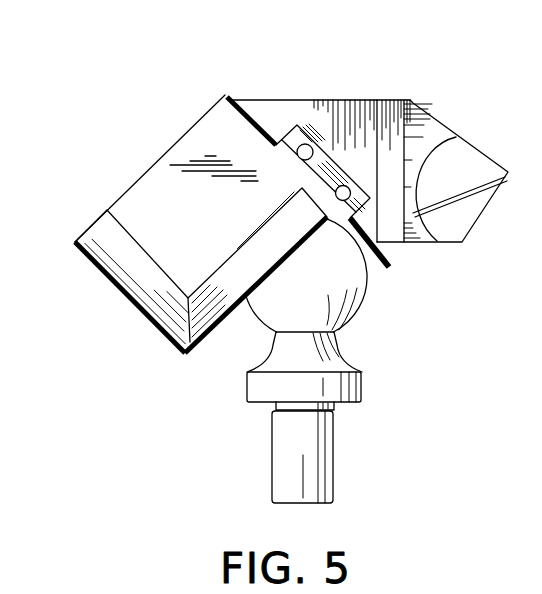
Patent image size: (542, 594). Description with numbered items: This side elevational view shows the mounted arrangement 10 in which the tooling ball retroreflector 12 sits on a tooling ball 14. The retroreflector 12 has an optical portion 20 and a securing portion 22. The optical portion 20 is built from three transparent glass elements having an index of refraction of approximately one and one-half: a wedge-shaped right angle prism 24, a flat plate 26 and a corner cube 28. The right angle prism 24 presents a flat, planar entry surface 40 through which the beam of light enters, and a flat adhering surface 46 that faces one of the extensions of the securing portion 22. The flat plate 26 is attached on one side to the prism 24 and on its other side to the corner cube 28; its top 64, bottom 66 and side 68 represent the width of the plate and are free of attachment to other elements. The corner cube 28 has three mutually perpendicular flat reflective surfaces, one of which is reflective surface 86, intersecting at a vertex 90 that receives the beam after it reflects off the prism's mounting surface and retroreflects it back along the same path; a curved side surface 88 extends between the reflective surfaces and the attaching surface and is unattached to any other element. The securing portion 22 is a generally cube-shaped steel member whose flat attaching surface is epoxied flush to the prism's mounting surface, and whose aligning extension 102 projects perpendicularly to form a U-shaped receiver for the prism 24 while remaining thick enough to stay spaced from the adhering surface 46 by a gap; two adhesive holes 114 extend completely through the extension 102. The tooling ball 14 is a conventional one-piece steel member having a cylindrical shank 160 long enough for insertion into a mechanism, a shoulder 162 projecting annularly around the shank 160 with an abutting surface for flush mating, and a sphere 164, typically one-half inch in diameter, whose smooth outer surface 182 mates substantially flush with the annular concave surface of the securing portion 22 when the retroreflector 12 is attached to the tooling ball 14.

The retroreflector assembly 10 is at (88, 114).
The tooling ball retroreflector 12 is at (180, 124).
The tooling ball 14 is at (342, 428).
The optical portion 20 is at (365, 100).
The securing portion 22 is at (123, 195).
The right angle prism 24 is at (283, 113).
The flat plate 26 is at (433, 133).
The corner cube 28 is at (462, 232).
The entry surface 40 is at (263, 100).
The adhering surface 46 is at (323, 128).
The top 64 is at (393, 120).
The bottom 66 is at (391, 248).
The side 68 is at (387, 173).
The reflective surface 86 is at (470, 210).
The side surface 88 is at (435, 134).
The vertex 90 is at (509, 172).
The aligning extension 102 is at (318, 167).
The adhesive holes 114 is at (336, 194).
The shank 160 is at (272, 450).
The shoulder 162 is at (247, 398).
The sphere 164 is at (357, 313).
The outer surface 182 is at (251, 305).